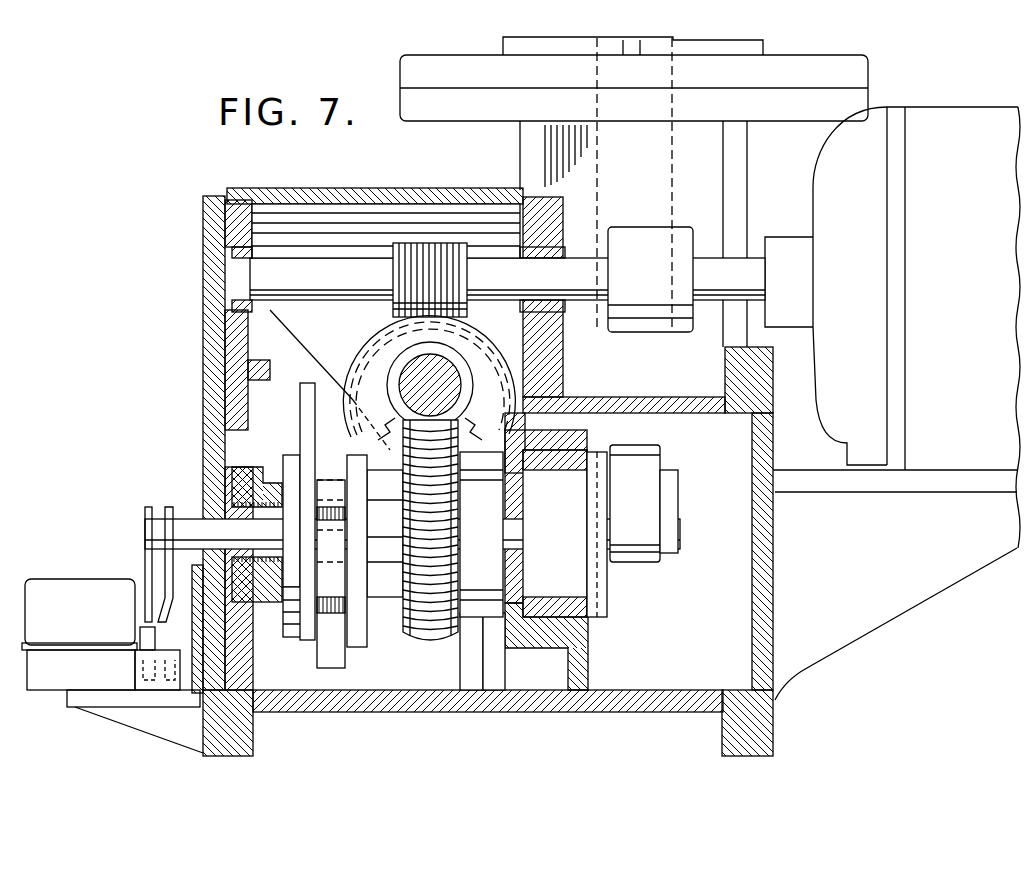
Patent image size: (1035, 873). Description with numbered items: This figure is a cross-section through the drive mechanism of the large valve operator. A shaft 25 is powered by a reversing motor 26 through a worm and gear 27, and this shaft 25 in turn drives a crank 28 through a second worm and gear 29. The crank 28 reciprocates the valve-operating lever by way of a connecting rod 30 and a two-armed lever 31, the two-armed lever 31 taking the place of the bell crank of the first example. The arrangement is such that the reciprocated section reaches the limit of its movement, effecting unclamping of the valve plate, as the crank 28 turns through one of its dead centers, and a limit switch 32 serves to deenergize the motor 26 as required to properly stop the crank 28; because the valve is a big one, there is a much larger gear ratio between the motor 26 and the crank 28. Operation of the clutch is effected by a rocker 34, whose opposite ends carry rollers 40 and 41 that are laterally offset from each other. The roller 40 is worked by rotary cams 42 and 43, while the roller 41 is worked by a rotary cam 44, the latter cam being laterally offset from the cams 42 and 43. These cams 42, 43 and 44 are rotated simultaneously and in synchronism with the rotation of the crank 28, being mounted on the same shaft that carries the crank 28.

The shaft 25 is at (443, 386).
The reversing motor 26 is at (974, 288).
The worm and gear 27 is at (385, 342).
The crank 28 is at (593, 557).
The worm and gear 29 is at (433, 503).
The connecting rod 30 is at (642, 497).
The two-armed lever 31 is at (655, 425).
The limit switch 32 is at (55, 595).
The rocker 34 is at (332, 657).
The roller 40 is at (293, 480).
The roller 41 is at (355, 657).
The rotary cam 42 is at (300, 415).
The rotary cam 43 is at (292, 627).
The rotary cam 44 is at (357, 602).